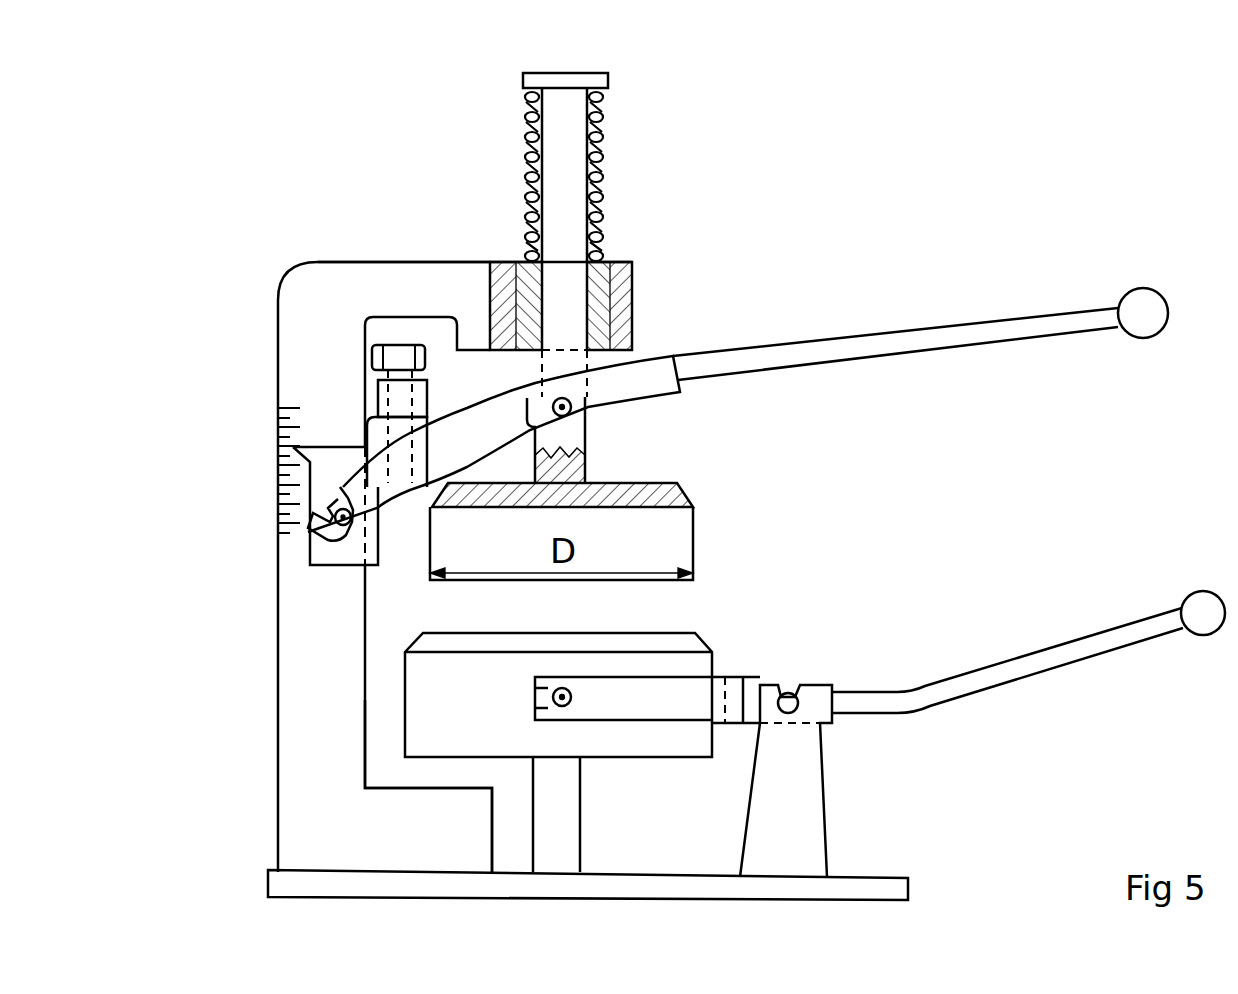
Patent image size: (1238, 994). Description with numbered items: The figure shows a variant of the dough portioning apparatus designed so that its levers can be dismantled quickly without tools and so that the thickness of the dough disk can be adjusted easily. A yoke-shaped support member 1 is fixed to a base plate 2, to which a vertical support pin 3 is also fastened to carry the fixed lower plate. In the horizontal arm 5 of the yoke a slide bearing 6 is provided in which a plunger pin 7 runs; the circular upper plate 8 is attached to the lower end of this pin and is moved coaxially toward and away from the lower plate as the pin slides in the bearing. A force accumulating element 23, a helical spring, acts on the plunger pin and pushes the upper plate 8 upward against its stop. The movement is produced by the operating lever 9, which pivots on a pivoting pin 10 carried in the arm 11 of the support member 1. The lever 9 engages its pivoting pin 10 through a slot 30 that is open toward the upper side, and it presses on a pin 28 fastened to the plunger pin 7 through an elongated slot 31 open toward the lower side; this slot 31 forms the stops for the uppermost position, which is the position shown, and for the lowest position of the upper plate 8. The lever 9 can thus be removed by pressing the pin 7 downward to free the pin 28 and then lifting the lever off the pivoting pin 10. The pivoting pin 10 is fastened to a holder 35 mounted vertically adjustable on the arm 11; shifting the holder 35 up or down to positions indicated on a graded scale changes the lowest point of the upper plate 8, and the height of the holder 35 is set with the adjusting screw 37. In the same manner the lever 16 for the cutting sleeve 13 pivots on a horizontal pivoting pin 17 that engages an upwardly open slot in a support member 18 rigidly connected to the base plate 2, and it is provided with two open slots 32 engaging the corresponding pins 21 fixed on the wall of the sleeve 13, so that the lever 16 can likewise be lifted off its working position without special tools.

The support member 1 is at (300, 375).
The base plate 2 is at (890, 888).
The support pin 3 is at (560, 830).
The horizontal arm 5 is at (425, 285).
The slide bearing 6 is at (635, 275).
The plunger pin 7 is at (563, 181).
The upper plate 8 is at (680, 495).
The operating lever 9 is at (972, 335).
The pivoting pin 10 is at (335, 525).
The support element 11 is at (305, 695).
The cutting sleeve 13 is at (712, 665).
The lever 16 is at (1082, 648).
The pivoting pin 17 is at (788, 705).
The support member 18 is at (800, 795).
The pin 21 is at (553, 690).
The force accumulating element 23 is at (600, 130).
The pin 28 is at (575, 415).
The slot 30 is at (336, 505).
The slot 31 is at (542, 480).
The slot 32 is at (573, 698).
The holder 35 is at (335, 558).
The adjusting screw 37 is at (370, 353).